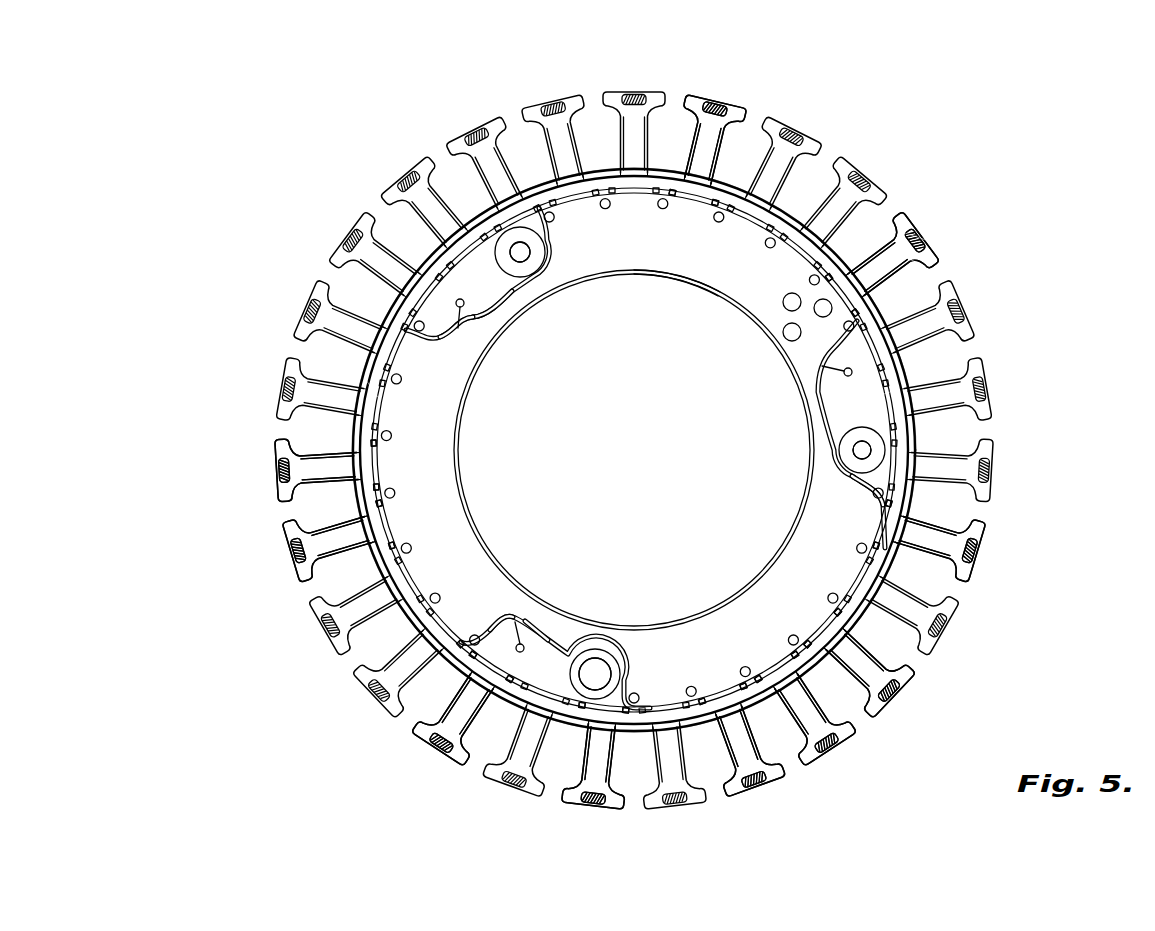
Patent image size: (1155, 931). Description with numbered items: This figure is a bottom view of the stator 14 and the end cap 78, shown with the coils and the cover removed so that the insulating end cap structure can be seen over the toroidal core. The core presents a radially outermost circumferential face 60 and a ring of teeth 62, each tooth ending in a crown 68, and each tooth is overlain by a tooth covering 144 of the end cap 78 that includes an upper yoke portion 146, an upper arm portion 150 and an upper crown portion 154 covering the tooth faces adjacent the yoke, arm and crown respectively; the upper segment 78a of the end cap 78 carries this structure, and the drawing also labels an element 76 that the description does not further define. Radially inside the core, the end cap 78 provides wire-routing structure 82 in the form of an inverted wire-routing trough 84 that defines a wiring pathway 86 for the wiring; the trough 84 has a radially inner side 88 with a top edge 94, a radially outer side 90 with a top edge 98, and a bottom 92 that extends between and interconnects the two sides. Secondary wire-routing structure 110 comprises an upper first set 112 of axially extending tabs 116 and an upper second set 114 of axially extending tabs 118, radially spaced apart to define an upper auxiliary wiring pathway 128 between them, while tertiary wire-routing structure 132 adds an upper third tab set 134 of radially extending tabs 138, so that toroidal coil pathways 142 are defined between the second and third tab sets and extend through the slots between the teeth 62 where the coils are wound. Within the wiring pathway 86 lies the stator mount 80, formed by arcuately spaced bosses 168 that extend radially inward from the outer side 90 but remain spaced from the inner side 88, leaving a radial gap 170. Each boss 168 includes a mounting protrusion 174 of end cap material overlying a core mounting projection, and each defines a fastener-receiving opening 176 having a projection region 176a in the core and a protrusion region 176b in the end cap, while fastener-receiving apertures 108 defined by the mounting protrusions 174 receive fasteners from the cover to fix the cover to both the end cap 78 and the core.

The stator 14 is at (1005, 115).
The radially outermost circumferential face 60 is at (790, 157).
The teeth 62 is at (626, 95).
The crown 68 is at (705, 108).
The arm 76 is at (442, 170).
The end cap 78 is at (950, 217).
The upper segment 78a is at (926, 266).
The stator mount 80 is at (522, 316).
The wire-routing structure 82 is at (768, 264).
The wire-routing trough 84 is at (742, 250).
The wiring pathway 86 is at (713, 264).
The radially inner side 88 is at (636, 276).
The radially outer side 90 is at (596, 193).
The bottom 92 is at (667, 277).
The top edge 94 is at (478, 404).
The top edge 98 is at (373, 393).
The fastener-receiving apertures 108 is at (460, 308).
The secondary wire-routing structure 110 is at (862, 692).
The upper first set of tabs 112 is at (790, 722).
The upper second set of tabs 114 is at (689, 792).
The tabs 116 is at (720, 700).
The tabs 118 is at (535, 778).
The upper auxiliary wiring pathway 128 is at (880, 398).
The tertiary wire-routing structure 132 is at (968, 303).
The upper third tab set 134 is at (936, 240).
The tabs 138 is at (958, 531).
The coil pathways 142 is at (883, 214).
The tooth coverings 144 is at (540, 106).
The upper yoke portion 146 is at (713, 195).
The upper arm portion 150 is at (838, 168).
The upper crown portion 154 is at (290, 386).
The bosses 168 is at (500, 322).
The radial gap 170 is at (552, 281).
The mounting protrusions 174 is at (482, 340).
The fastener-receiving opening 176 is at (609, 207).
The projection region 176a is at (856, 449).
The protrusion region 176b is at (528, 258).